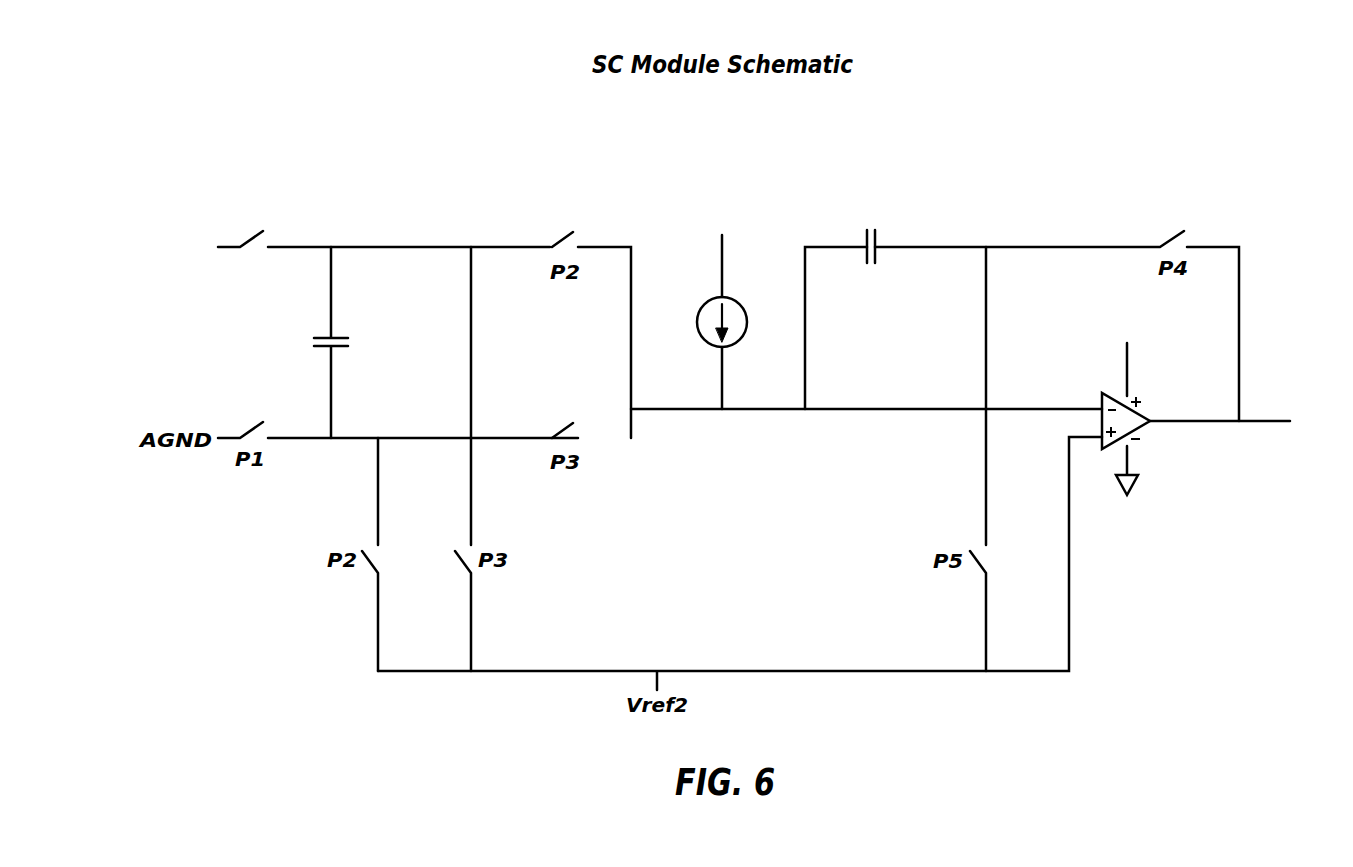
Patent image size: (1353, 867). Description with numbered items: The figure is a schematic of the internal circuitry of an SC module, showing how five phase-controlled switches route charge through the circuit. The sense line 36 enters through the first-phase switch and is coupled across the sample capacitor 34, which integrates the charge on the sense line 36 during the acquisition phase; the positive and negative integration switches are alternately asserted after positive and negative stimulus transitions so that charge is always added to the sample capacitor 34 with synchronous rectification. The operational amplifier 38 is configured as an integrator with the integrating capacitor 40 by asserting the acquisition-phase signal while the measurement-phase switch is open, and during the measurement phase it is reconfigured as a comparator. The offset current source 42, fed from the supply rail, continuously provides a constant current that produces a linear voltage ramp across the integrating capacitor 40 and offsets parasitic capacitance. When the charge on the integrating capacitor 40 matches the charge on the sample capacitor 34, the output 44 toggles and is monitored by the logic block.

The sample capacitor 34 is at (342, 312).
The sense line 36 is at (193, 234).
The Op Amp U1 38 is at (1155, 378).
The CInt 40 is at (867, 212).
The Ioff 42 is at (748, 322).
The Vout 44 is at (1318, 433).